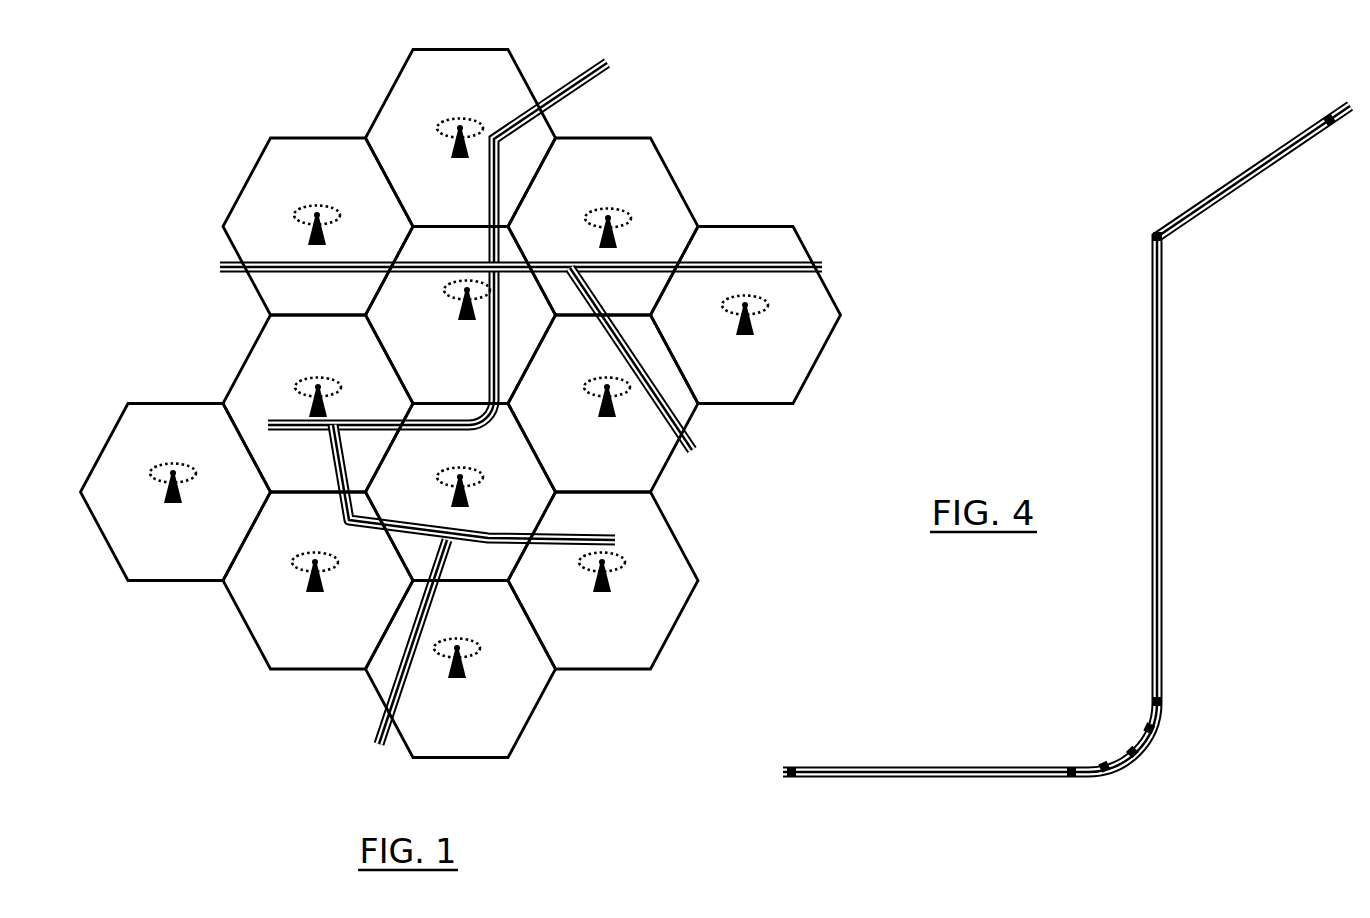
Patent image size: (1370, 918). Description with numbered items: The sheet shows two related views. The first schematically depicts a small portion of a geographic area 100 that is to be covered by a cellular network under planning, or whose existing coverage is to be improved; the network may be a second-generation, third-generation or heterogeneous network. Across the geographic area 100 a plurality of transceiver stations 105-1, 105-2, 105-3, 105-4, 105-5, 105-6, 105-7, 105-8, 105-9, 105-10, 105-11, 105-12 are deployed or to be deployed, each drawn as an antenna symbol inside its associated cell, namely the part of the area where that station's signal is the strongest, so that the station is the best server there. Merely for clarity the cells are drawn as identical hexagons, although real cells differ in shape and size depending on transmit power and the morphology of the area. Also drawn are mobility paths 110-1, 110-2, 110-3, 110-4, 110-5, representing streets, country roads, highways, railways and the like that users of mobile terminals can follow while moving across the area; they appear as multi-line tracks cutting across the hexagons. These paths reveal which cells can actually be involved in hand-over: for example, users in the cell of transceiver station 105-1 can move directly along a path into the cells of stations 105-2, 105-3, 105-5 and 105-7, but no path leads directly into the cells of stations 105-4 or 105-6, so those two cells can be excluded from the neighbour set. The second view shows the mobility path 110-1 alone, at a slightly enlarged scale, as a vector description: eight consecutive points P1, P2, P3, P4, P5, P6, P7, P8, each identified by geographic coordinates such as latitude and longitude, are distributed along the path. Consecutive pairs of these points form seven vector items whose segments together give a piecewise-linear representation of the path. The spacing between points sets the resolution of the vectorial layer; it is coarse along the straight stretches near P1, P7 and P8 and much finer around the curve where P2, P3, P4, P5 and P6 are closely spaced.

In FIG. 1, the geographic area 100 is at (163, 155).
In FIG. 1, the transceiver station 105-1 is at (463, 292).
In FIG. 1, the transceiver station 105-2 is at (458, 125).
In FIG. 1, the transceiver station 105-3 is at (606, 215).
In FIG. 1, the transceiver station 105-4 is at (604, 384).
In FIG. 1, the transceiver station 105-5 is at (462, 476).
In FIG. 1, the transceiver station 105-6 is at (316, 384).
In FIG. 1, the transceiver station 105-7 is at (316, 212).
In FIG. 1, the transceiver station 105-8 is at (750, 303).
In FIG. 1, the transceiver station 105-9 is at (612, 559).
In FIG. 1, the transceiver station 105-10 is at (458, 647).
In FIG. 1, the transceiver station 105-11 is at (313, 558).
In FIG. 1, the transceiver station 105-12 is at (172, 470).
In FIG. 1, the mobility path 110-1 is at (498, 162).
In FIG. 4, the mobility path 110-1 is at (1148, 441).
In FIG. 1, the mobility path 110-2 is at (713, 268).
In FIG. 1, the mobility path 110-3 is at (698, 441).
In FIG. 1, the mobility path 110-4 is at (566, 535).
In FIG. 1, the mobility path 110-5 is at (378, 732).
In FIG. 4, the point P1 is at (790, 775).
In FIG. 4, the point P2 is at (1070, 775).
In FIG. 4, the point P3 is at (1104, 769).
In FIG. 4, the point P4 is at (1136, 754).
In FIG. 4, the point P5 is at (1154, 729).
In FIG. 4, the point P6 is at (1160, 701).
In FIG. 4, the point P7 is at (1152, 236).
In FIG. 4, the point P8 is at (1325, 121).